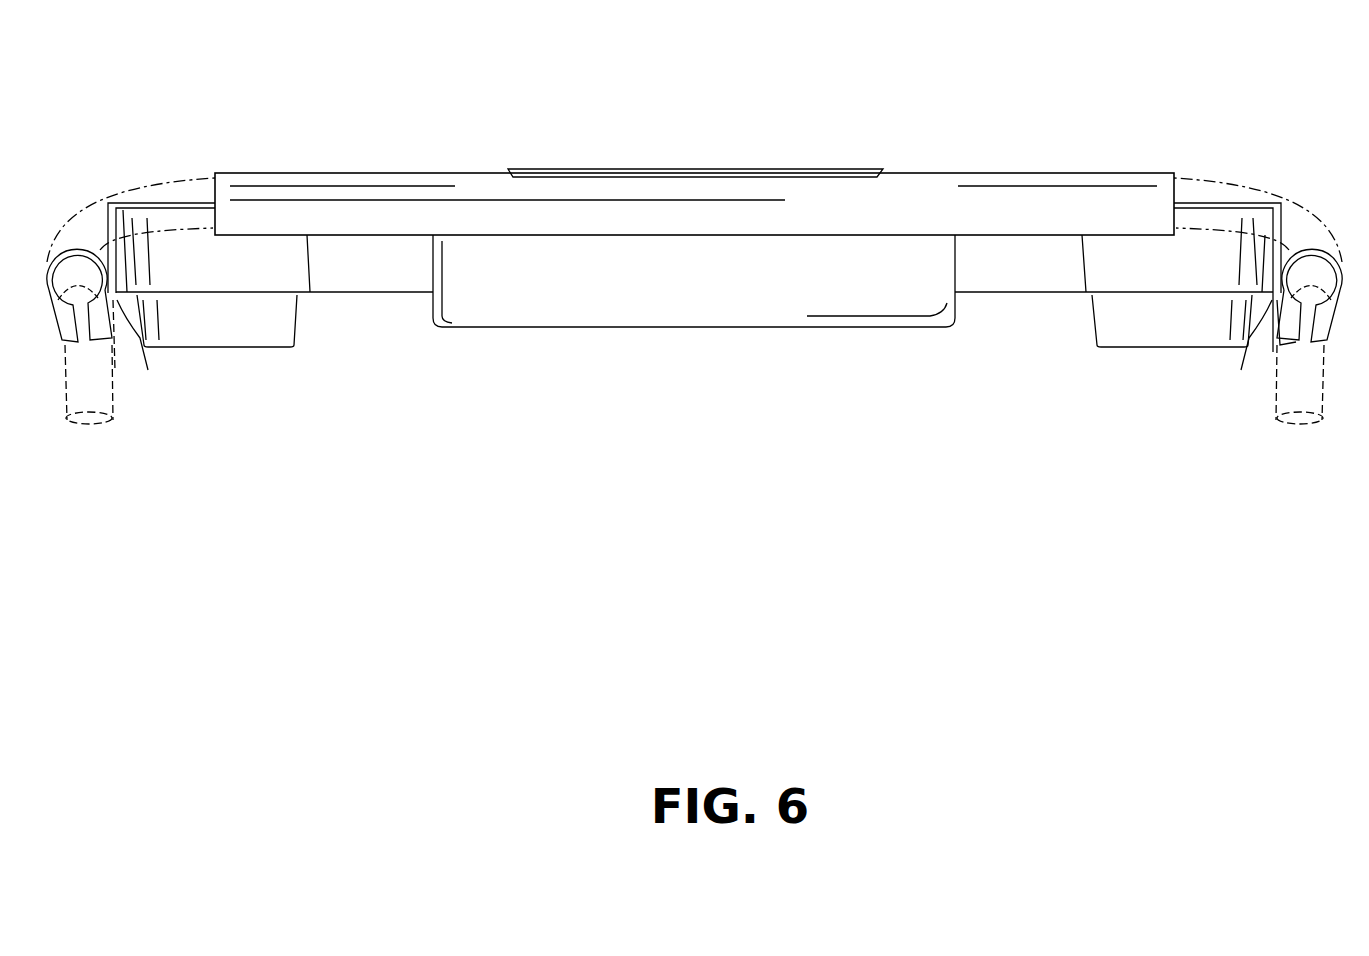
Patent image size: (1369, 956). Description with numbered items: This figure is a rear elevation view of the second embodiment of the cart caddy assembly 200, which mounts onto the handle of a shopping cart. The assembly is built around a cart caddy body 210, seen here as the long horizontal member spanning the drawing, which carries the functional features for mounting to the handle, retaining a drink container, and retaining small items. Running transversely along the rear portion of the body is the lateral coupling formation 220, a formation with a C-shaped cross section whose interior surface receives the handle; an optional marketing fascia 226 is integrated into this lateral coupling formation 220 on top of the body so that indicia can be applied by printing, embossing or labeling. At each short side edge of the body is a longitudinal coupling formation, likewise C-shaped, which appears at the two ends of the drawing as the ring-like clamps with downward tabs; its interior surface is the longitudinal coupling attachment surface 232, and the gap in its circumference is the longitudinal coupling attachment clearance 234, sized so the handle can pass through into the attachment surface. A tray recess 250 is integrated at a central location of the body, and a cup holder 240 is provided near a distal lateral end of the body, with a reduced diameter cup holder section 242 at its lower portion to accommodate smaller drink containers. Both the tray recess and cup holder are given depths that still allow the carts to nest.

The cart caddy assembly 200 is at (1110, 133).
The cart caddy body 210 is at (945, 173).
The marketing fascia 226 is at (692, 168).
The lateral coupling formation 220 is at (660, 218).
The tray recess 250 is at (433, 280).
The cup holder 240 is at (1083, 270).
The reduced diameter cup holder section 242 is at (1092, 325).
The longitudinal coupling attachment surface 232 is at (1318, 276).
The longitudinal coupling attachment clearance 234 is at (1303, 330).